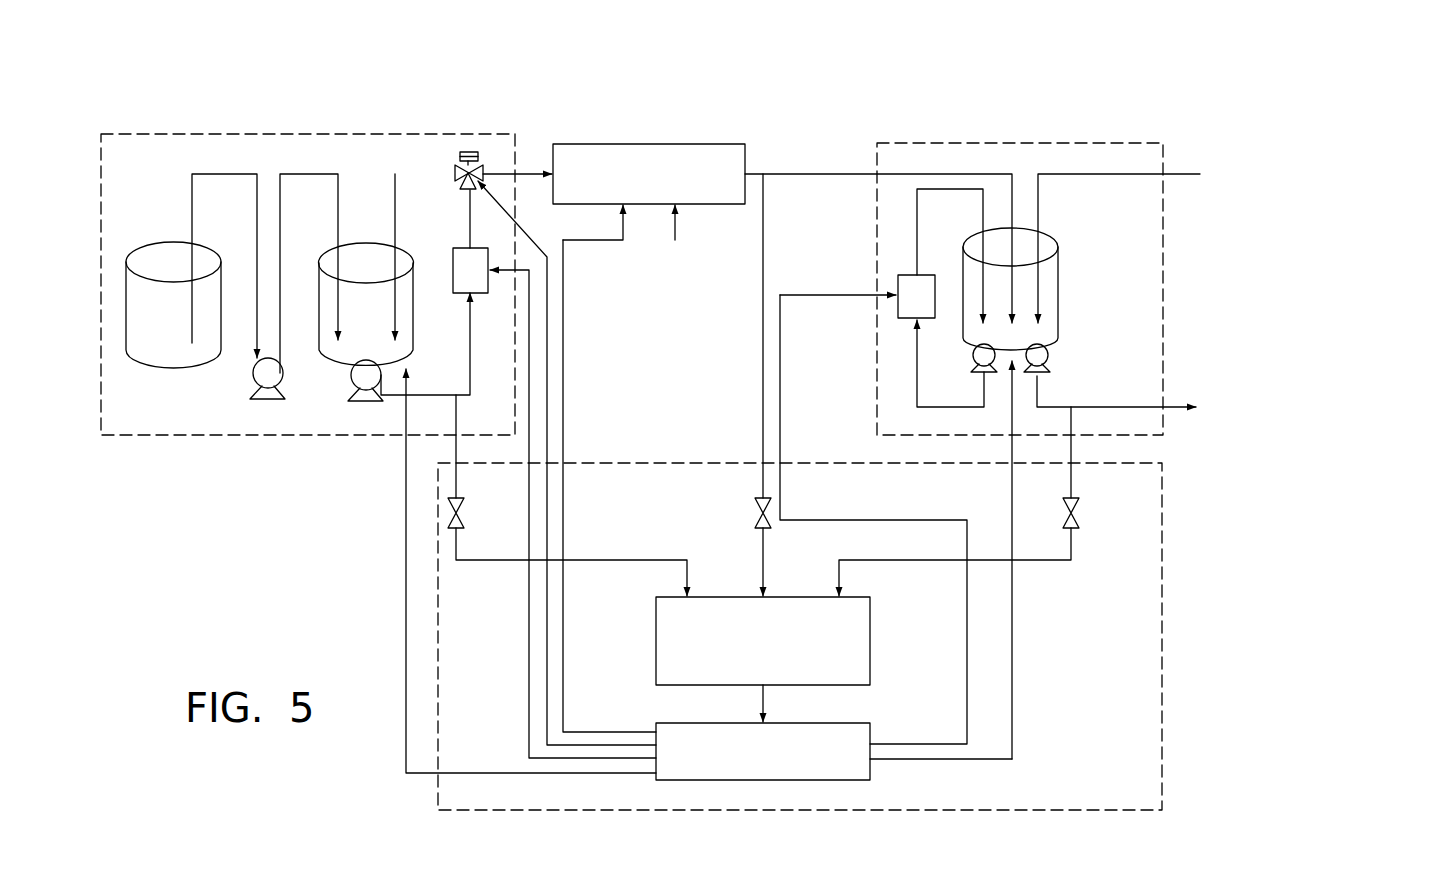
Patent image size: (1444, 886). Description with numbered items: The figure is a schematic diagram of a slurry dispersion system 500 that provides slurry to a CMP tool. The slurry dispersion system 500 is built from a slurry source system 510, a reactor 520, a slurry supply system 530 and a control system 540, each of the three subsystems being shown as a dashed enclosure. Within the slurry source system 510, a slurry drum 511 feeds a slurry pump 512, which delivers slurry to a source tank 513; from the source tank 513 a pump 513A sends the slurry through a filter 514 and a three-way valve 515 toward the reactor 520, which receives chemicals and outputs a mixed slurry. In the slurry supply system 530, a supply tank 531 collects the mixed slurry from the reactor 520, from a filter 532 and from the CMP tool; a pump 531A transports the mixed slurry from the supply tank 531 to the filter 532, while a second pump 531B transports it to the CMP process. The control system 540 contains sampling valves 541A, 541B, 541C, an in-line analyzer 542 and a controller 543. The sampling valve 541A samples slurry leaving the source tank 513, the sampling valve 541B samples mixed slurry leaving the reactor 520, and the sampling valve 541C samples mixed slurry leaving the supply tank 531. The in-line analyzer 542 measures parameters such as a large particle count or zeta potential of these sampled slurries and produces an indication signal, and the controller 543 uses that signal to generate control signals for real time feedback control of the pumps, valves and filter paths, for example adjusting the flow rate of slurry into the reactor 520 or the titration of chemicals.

The slurry dispersion system 500 is at (1122, 95).
The slurry source system 510 is at (202, 134).
The slurry drum 511 is at (178, 368).
The slurry pump 512 is at (268, 400).
The source tank 513 is at (330, 365).
The pump 513A is at (366, 400).
The filter 514 is at (455, 248).
The three-way valve 515 is at (460, 162).
The reactor 520 is at (655, 144).
The slurry supply system 530 is at (980, 142).
The supply tank 531 is at (1058, 292).
The pump 531A is at (972, 362).
The pump 531B is at (1047, 367).
The filter 532 is at (898, 280).
The control system 540 is at (1163, 594).
The sampling valve 541A is at (464, 508).
The sampling valve 541B is at (756, 508).
The sampling valve 541C is at (1076, 528).
The in-line analyzer 542 is at (870, 641).
The controller 543 is at (832, 723).